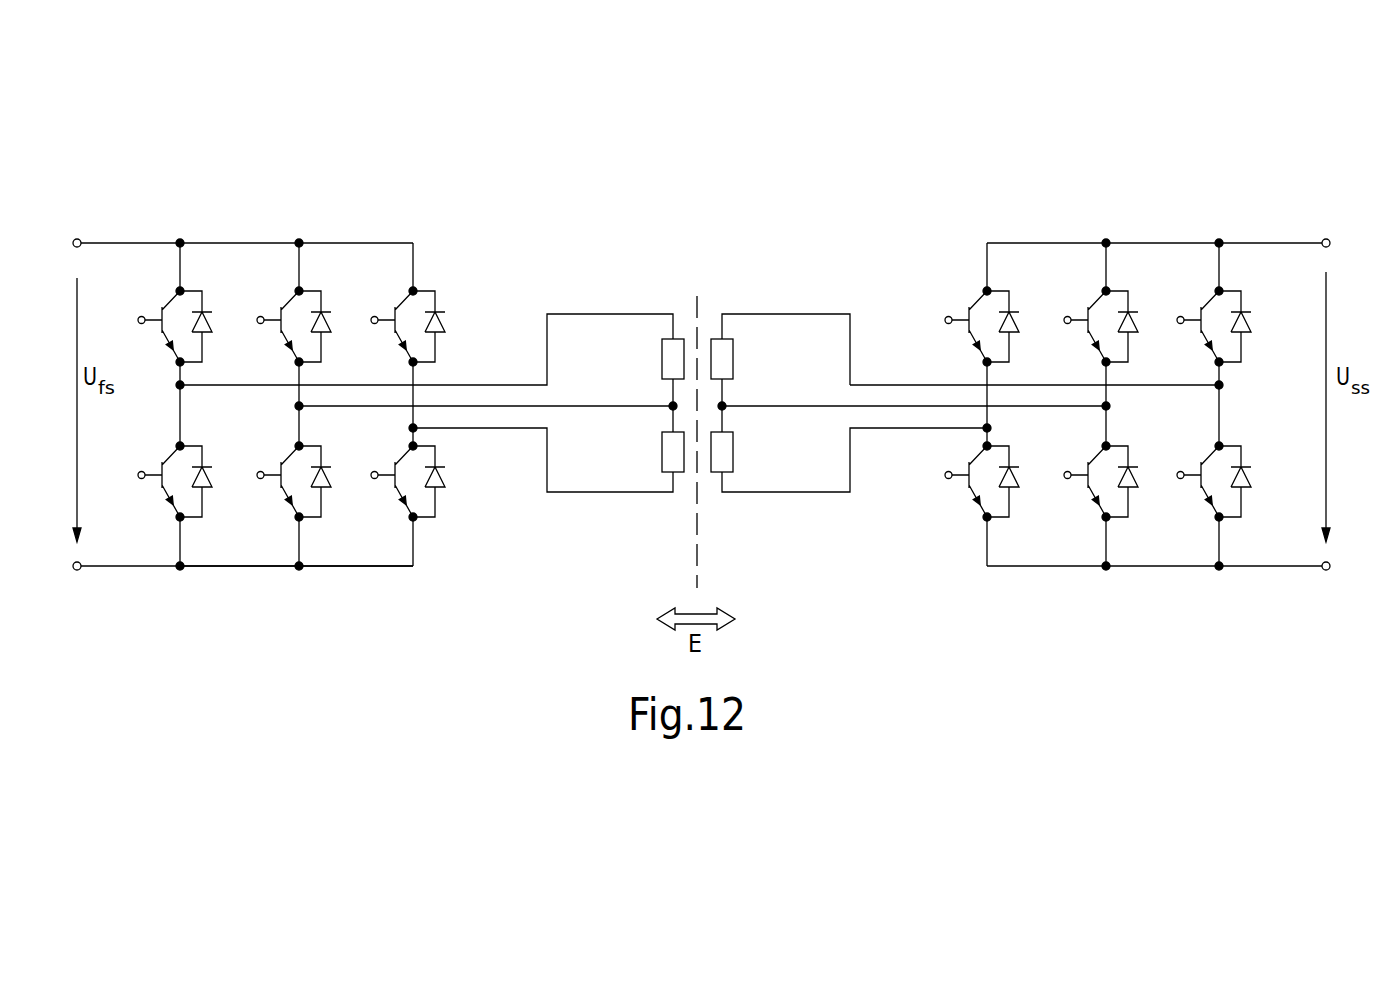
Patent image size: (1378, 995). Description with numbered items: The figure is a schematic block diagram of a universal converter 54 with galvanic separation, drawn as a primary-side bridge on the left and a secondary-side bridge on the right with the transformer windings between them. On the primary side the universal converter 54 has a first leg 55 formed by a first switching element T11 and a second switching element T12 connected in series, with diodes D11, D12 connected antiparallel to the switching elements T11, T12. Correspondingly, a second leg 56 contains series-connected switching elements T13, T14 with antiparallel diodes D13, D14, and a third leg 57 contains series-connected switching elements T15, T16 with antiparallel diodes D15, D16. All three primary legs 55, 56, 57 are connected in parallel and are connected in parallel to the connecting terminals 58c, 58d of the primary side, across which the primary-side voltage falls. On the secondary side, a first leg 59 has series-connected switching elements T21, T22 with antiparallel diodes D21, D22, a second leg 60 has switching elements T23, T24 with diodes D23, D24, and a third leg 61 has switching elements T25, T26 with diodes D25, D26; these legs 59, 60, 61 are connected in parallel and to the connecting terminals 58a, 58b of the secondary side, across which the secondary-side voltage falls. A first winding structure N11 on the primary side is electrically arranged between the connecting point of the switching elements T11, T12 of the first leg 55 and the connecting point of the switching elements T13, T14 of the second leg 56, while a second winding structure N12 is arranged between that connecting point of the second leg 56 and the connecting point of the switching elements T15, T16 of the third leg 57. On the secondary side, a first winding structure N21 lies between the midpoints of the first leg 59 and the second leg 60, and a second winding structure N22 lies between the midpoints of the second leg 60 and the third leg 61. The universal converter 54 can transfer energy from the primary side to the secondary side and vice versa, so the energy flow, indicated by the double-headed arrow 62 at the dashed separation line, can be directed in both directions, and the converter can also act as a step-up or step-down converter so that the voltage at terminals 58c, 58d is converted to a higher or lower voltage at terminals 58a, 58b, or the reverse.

The universal converter 54 is at (338, 583).
The first leg of the primary side 55 is at (180, 262).
The second leg of the primary side 56 is at (299, 262).
The third leg of the primary side 57 is at (413, 262).
The connecting terminal of the secondary side 58a is at (1325, 238).
The connecting terminal of the secondary side 58b is at (1326, 571).
The connecting terminal of the primary side 58c is at (78, 238).
The connecting terminal of the primary side 58d is at (78, 571).
The first leg of the secondary side 59 is at (987, 260).
The second leg of the secondary side 60 is at (1106, 262).
The third leg of the secondary side 61 is at (1219, 262).
The arrow 62 is at (700, 608).
The first switching element T11 is at (165, 302).
The second switching element T12 is at (165, 460).
The first switching element T13 is at (284, 302).
The second switching element T14 is at (284, 460).
The first switching element T15 is at (398, 302).
The second switching element T16 is at (398, 460).
The first switching element T21 is at (972, 302).
The second switching element T22 is at (972, 470).
The first switching element T23 is at (1091, 302).
The second switching element T24 is at (1092, 460).
The first switching element T25 is at (1204, 302).
The second switching element T26 is at (1205, 460).
The diode D11 is at (211, 321).
The diode D12 is at (212, 478).
The diode D13 is at (330, 321).
The diode D14 is at (331, 478).
The diode D15 is at (444, 321).
The diode D16 is at (446, 483).
The diode D21 is at (1020, 327).
The diode D22 is at (1021, 492).
The diode D23 is at (1139, 327).
The diode D24 is at (1130, 476).
The diode D25 is at (1250, 323).
The diode D26 is at (1252, 478).
The first winding structure N11 is at (662, 360).
The second winding structure N12 is at (662, 453).
The first winding structure N21 is at (733, 355).
The second winding structure N22 is at (733, 450).